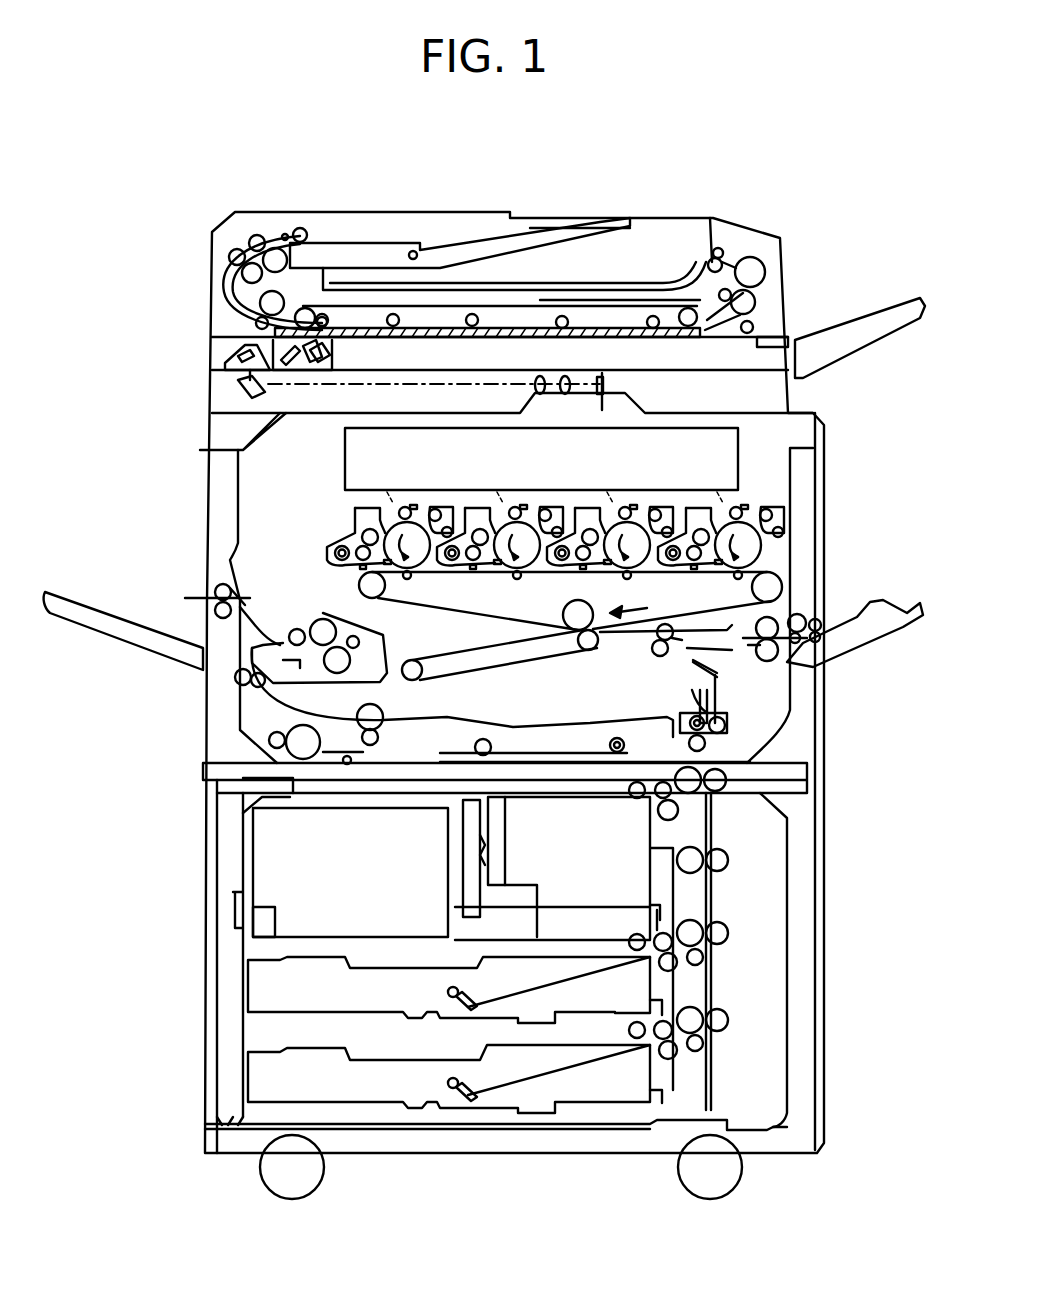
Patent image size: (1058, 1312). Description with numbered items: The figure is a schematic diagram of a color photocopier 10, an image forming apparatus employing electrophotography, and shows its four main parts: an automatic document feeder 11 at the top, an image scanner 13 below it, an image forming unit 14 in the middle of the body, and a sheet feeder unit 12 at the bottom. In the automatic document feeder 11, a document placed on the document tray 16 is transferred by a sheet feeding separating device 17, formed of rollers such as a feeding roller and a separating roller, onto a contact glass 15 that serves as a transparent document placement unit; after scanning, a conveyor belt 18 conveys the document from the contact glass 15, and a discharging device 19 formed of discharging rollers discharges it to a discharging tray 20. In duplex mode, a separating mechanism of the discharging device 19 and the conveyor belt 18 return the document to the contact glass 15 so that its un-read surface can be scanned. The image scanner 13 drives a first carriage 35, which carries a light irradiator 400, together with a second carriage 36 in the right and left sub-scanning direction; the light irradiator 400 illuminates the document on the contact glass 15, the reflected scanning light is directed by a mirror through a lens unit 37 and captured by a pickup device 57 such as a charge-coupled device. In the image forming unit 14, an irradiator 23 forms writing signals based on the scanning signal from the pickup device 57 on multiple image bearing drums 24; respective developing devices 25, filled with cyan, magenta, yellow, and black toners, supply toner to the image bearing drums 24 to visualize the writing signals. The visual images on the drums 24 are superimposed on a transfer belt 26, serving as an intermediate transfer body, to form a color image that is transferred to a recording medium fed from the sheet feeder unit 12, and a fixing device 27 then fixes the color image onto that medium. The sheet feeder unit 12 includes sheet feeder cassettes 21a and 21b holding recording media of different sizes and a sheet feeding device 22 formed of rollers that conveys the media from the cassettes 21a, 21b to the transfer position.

The photocopier 10 is at (463, 203).
The automatic document feeder 11 is at (197, 287).
The sheet feeder unit 12 is at (198, 927).
The image scanner 13 is at (197, 380).
The image forming unit 14 is at (198, 683).
The contact glass 15 is at (607, 326).
The document tray 16 is at (538, 214).
The sheet feeding separating device 17 is at (247, 237).
The conveyor belt 18 is at (543, 300).
The discharging device 19 is at (778, 283).
The discharging tray 20 is at (645, 280).
The sheet feeder cassette 21a is at (283, 1013).
The sheet feeder cassette 21b is at (283, 1103).
The sheet feeding device 22 is at (727, 912).
The irradiator 23 is at (343, 455).
The image bearing drum 24 is at (752, 548).
The developing device 25 is at (777, 510).
The transfer belt 26 is at (455, 617).
The fixing device 27 is at (315, 610).
The first carriage 35 is at (335, 353).
The second carriage 36 is at (232, 380).
The lens unit 37 is at (538, 374).
The pickup device 57 is at (603, 385).
The light irradiator 400 is at (322, 343).